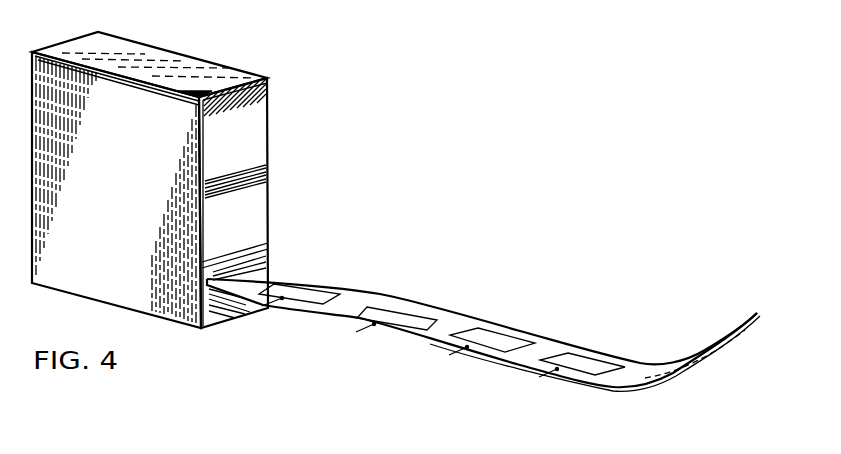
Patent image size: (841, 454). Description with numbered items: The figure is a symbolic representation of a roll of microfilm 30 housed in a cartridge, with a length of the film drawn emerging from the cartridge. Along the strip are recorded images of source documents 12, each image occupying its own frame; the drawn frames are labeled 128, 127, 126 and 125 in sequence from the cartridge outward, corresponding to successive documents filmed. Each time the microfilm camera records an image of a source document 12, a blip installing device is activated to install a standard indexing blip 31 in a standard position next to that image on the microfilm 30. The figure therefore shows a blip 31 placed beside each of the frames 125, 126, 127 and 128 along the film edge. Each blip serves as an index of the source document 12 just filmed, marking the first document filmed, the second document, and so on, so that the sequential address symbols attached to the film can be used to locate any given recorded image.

The microfilm 30 is at (287, 272).
The indexing blip 31 is at (262, 306).
The recorded image frame 125 is at (581, 377).
The recorded image frame 126 is at (491, 353).
The recorded image frame 127 is at (397, 332).
The recorded image frame 128 is at (299, 310).
The source document 12 is at (590, 360).